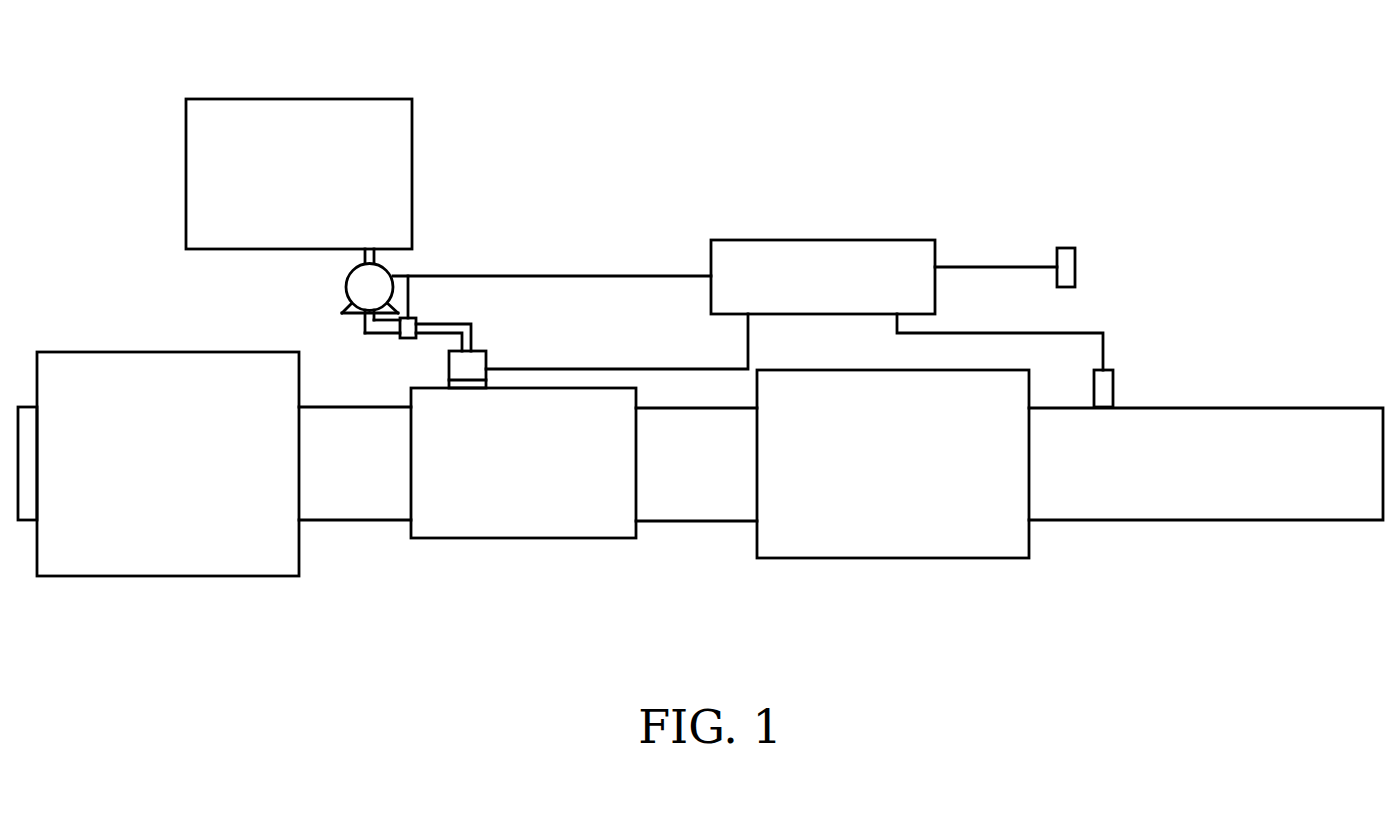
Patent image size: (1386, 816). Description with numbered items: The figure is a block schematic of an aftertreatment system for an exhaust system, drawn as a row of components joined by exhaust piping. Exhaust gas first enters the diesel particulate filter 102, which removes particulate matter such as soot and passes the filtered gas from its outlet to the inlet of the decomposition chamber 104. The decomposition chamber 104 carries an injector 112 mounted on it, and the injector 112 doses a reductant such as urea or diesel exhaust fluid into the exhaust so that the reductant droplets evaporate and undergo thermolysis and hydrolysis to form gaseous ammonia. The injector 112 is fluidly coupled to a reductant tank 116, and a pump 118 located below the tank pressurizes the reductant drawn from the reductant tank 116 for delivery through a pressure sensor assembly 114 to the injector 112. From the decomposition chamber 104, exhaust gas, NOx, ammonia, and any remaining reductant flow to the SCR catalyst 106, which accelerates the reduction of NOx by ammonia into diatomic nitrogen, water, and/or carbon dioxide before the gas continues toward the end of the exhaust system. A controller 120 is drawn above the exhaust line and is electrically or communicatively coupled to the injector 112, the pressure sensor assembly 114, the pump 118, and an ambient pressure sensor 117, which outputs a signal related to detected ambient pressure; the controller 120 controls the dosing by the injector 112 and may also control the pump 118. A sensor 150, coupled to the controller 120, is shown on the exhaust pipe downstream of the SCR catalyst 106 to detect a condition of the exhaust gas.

The diesel particulate filter 102 is at (200, 577).
The decomposition chamber 104 is at (626, 387).
The SCR catalyst 106 is at (903, 559).
The injector 112 is at (487, 362).
The pressure sensor assembly 114 is at (419, 320).
The reductant tank 116 is at (366, 98).
The ambient pressure sensor 117 is at (1077, 264).
The pump 118 is at (346, 294).
The controller 120 is at (805, 238).
The sensor 150 is at (1115, 392).